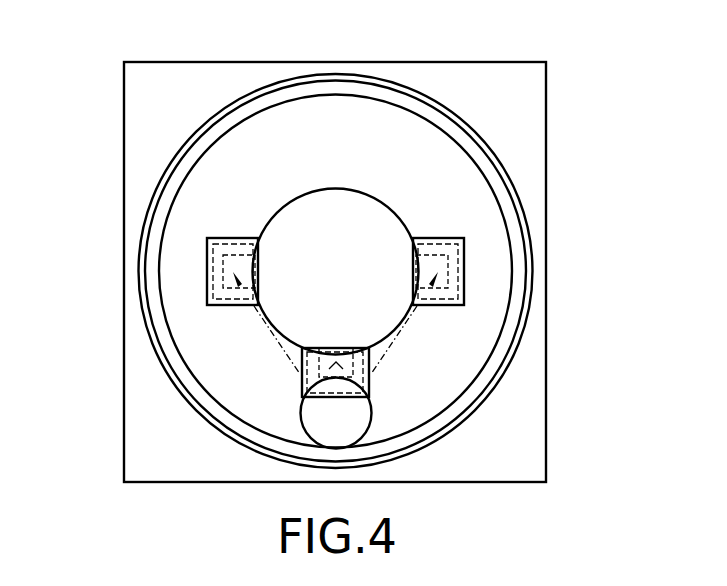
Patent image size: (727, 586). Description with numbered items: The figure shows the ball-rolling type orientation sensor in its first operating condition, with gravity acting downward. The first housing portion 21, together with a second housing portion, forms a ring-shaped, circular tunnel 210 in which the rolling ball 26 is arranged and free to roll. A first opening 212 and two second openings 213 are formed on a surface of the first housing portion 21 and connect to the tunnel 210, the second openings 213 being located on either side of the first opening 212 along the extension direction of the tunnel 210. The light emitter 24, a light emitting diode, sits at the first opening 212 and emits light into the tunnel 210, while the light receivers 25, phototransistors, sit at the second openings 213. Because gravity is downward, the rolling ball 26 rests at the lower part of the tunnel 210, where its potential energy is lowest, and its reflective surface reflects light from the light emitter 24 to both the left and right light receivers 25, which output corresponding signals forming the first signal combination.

The first housing portion 21 is at (505, 70).
The tunnel 210 is at (278, 128).
The light receivers 25 is at (235, 257).
The second openings 213 is at (222, 270).
The light emitter 24 is at (367, 352).
The first opening 212 is at (347, 365).
The rolling ball 26 is at (310, 417).